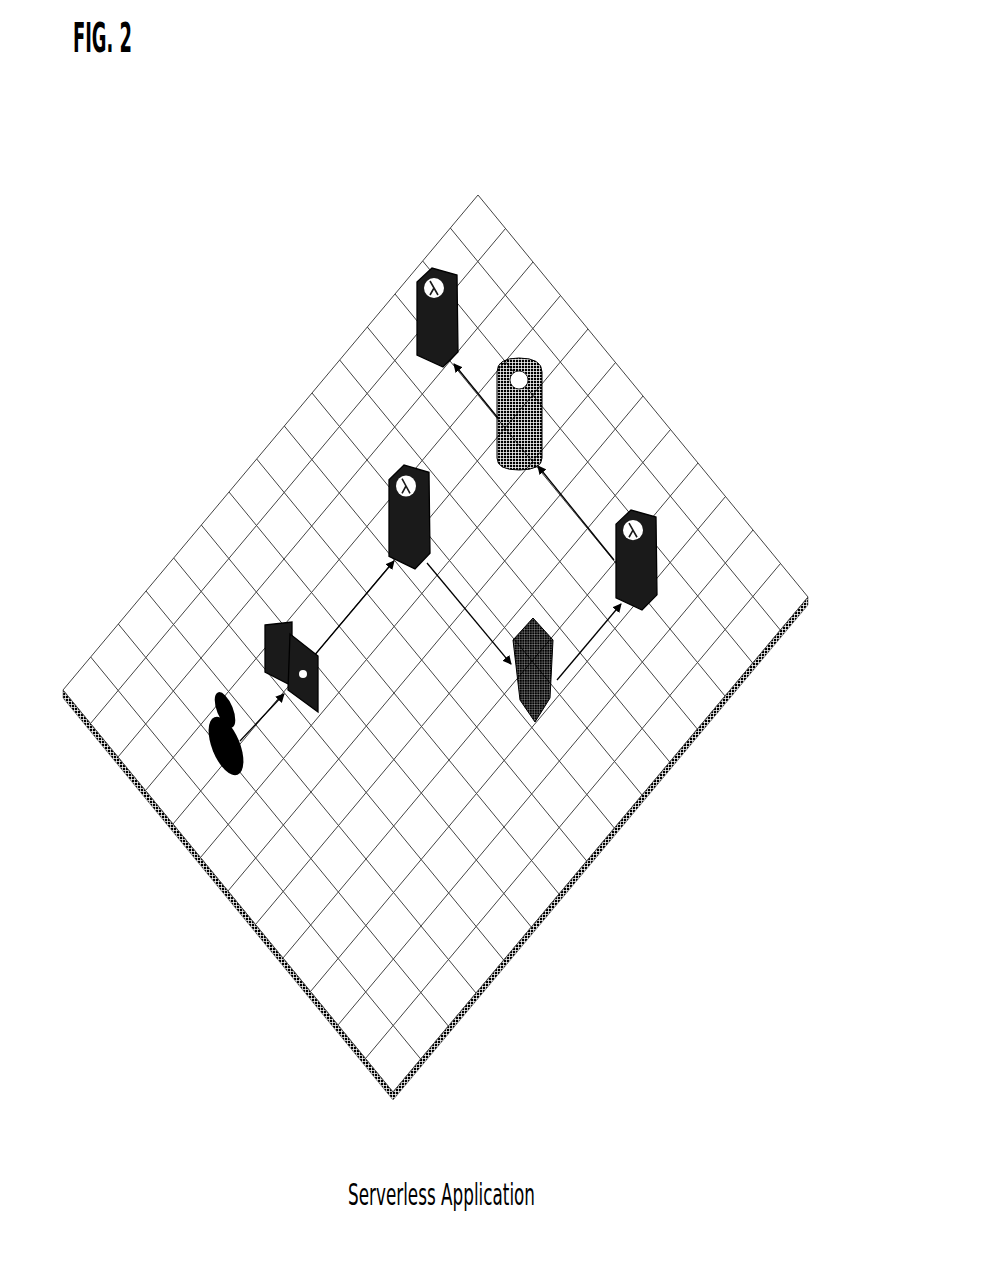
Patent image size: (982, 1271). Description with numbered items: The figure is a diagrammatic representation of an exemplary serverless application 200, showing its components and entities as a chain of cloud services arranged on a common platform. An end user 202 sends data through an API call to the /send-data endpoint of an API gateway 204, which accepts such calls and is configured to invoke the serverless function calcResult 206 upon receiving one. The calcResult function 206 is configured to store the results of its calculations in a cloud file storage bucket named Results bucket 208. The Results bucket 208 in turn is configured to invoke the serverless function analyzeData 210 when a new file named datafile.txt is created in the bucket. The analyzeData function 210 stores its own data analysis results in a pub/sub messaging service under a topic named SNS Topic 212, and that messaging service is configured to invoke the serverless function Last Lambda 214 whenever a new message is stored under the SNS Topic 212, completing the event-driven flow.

The serverless application 200 is at (562, 127).
The end user 202 is at (207, 737).
The API gateway 204 is at (264, 625).
The serverless function calcResult 206 is at (378, 541).
The cloud file storage bucket Results bucket 208 is at (545, 696).
The serverless function analyzeData 210 is at (653, 600).
The pub/sub messaging service SNS Topic 212 is at (542, 380).
The serverless function Last Lambda 214 is at (413, 297).